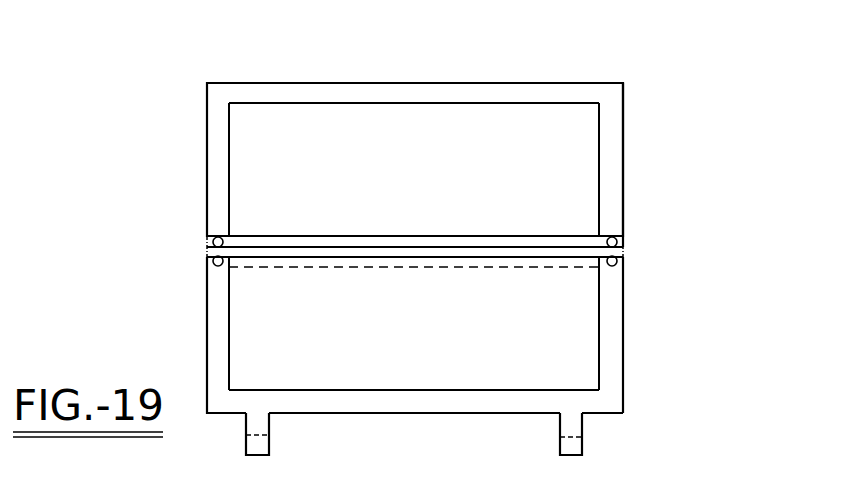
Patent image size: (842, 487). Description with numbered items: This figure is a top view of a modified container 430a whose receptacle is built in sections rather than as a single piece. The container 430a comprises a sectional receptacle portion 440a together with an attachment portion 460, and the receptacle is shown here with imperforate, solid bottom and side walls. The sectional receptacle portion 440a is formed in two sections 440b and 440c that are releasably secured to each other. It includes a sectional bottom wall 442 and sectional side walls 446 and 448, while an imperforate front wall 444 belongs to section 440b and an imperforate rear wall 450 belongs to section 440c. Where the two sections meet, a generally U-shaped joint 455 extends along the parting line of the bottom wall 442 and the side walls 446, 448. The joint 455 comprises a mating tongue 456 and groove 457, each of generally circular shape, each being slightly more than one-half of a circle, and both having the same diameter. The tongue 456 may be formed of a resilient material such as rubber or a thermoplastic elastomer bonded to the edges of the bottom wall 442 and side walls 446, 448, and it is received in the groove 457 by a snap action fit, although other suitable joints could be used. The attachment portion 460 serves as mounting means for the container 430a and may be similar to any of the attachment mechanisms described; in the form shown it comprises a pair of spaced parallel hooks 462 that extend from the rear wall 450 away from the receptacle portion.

The container 430a is at (190, 118).
The sectional receptacle portion 440a is at (584, 80).
The section 440b is at (626, 116).
The section 440c is at (627, 391).
The imperforate front wall 444 is at (385, 83).
The sectional side wall 446 is at (207, 164).
The sectional side wall 448 is at (623, 174).
The sectional bottom wall 442 is at (267, 190).
The U-shaped joint 455 is at (200, 245).
The tongue 456 is at (622, 248).
The groove 457 is at (622, 258).
The imperforate rear wall 450 is at (428, 414).
The attachment portion 460 is at (244, 458).
The hook 462 is at (571, 458).